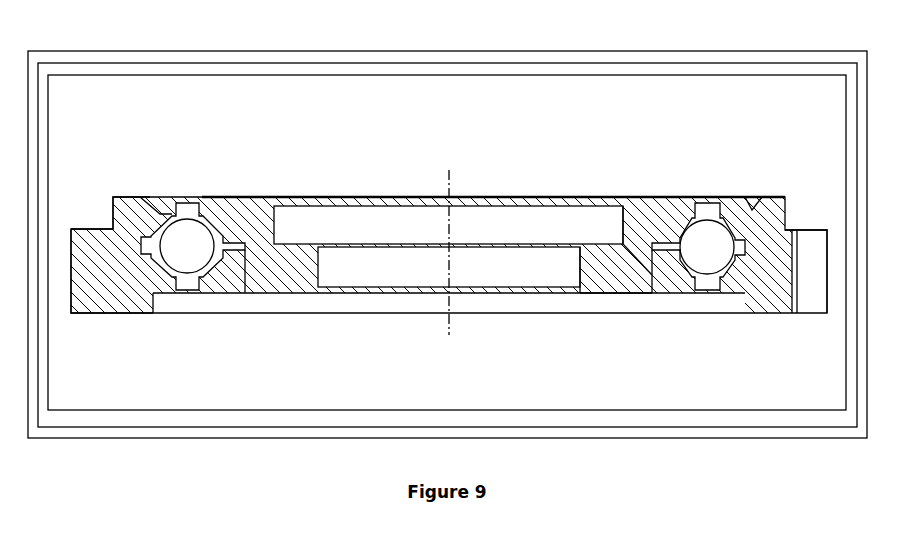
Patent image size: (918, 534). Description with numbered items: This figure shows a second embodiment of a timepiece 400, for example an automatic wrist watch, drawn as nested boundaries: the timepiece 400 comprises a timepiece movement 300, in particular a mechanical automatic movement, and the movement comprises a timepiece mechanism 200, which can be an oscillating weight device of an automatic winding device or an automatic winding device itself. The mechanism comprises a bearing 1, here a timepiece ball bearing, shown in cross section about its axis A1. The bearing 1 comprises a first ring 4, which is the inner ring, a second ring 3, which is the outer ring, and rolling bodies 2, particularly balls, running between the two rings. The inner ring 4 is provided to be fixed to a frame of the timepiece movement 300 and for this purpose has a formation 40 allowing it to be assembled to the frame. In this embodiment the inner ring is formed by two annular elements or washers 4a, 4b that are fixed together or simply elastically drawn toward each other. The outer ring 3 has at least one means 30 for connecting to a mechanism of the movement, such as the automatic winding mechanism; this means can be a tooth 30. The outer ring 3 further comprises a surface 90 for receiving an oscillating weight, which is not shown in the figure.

The bearing 1 is at (410, 160).
The rotation axis A1 is at (450, 182).
The rolling bodies 2 is at (187, 246).
The second ring 3 is at (107, 298).
The surface for receiving an oscillating weight 90 is at (89, 224).
The formation 40 is at (553, 228).
The first ring 4 is at (665, 192).
The annular element 4a is at (612, 294).
The annular element 4b is at (680, 282).
The means for connecting 30 is at (806, 225).
The timepiece mechanism 200 is at (663, 70).
The timepiece movement 300 is at (713, 58).
The timepiece 400 is at (760, 46).